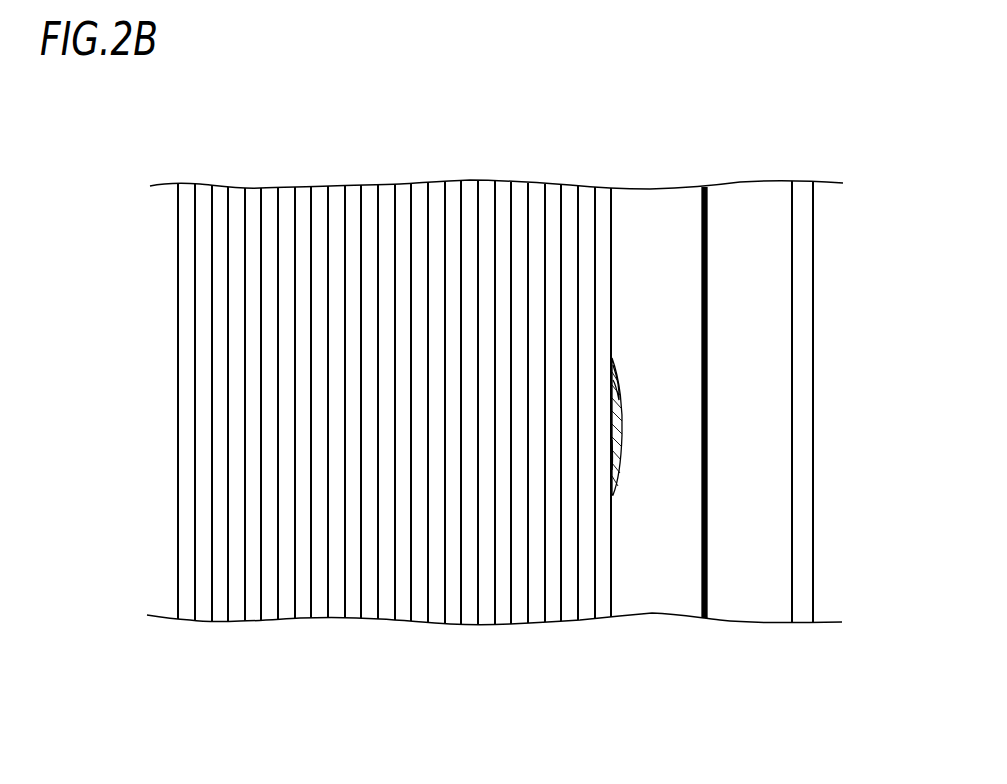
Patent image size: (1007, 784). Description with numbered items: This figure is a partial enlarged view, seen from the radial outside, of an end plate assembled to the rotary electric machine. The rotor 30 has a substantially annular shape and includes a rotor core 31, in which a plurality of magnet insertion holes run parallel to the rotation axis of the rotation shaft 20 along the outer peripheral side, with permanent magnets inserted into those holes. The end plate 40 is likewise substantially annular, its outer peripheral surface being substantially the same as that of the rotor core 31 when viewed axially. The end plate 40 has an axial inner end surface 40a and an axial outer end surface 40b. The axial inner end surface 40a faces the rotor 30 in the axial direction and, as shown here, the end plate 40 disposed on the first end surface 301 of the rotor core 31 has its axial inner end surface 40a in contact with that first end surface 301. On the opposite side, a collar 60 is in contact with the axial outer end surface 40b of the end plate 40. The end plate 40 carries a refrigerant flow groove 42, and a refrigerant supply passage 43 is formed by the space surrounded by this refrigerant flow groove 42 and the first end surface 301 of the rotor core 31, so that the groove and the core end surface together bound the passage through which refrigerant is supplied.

The rotor 30 is at (338, 186).
The rotor core 31 is at (422, 181).
The first end surface 301 is at (612, 222).
The end plate 40 is at (670, 213).
The axial inner end surface 40a is at (611, 520).
The axial outer end surface 40b is at (707, 522).
The refrigerant flow groove 42 is at (615, 360).
The refrigerant supply passage 43 is at (615, 445).
The collar 60 is at (755, 205).
The rotation shaft 20 is at (802, 327).